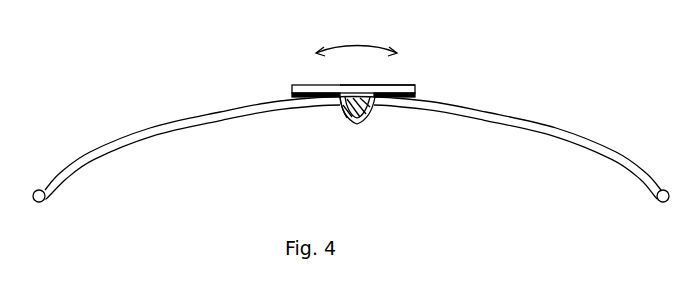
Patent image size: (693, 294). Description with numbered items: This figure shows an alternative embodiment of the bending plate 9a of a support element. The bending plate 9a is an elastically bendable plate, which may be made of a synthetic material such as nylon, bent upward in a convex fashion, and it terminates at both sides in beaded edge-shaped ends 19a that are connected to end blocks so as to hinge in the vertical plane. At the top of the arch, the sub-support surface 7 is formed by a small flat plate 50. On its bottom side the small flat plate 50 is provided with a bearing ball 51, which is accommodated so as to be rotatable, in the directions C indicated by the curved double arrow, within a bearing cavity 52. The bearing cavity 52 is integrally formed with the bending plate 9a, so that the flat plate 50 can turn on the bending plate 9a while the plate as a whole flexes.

The sub-support surface 7 is at (371, 84).
The bending plate 9a is at (584, 135).
The beaded edge-shaped ends 19a is at (46, 196).
The small flat plate 50 is at (320, 85).
The bearing ball 51 is at (341, 105).
The bearing cavity 52 is at (369, 124).
The directions C is at (355, 38).